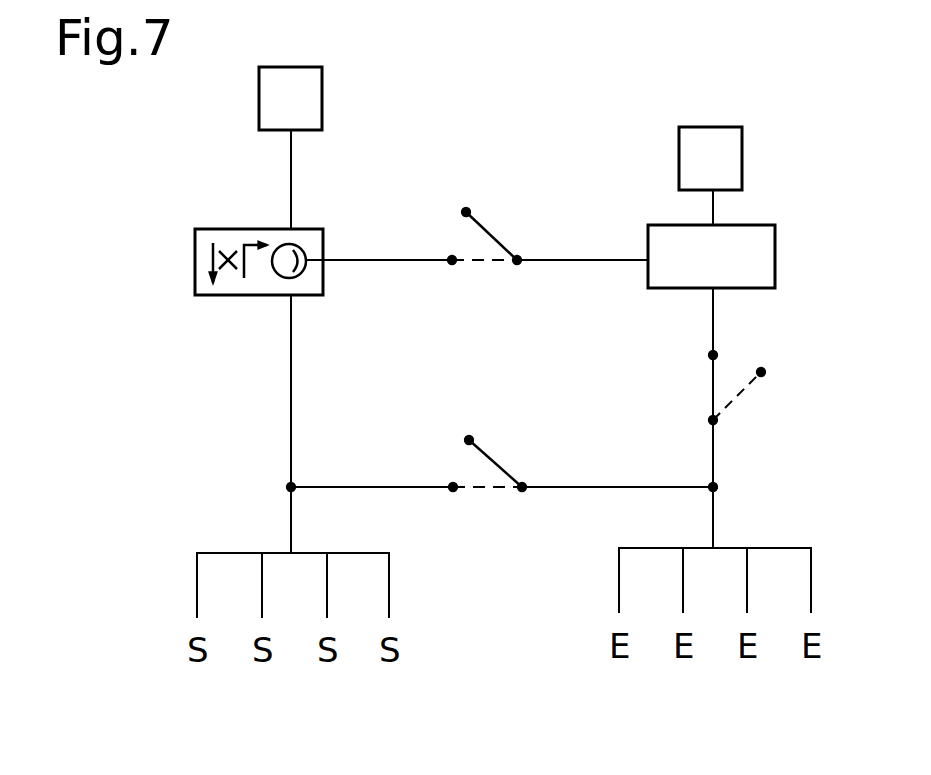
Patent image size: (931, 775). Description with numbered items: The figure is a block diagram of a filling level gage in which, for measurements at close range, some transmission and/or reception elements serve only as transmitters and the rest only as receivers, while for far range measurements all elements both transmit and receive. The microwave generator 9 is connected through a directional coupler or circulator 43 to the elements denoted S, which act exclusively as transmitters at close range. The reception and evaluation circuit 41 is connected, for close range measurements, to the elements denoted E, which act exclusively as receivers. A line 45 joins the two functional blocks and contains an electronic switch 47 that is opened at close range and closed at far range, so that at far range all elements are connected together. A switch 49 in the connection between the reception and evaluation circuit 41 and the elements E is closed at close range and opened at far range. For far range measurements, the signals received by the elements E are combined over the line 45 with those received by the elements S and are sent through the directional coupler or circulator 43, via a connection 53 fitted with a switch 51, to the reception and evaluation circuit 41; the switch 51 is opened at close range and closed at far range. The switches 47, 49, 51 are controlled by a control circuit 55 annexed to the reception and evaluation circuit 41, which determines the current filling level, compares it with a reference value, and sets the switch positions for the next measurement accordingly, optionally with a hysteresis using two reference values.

The microwave generator 9 is at (318, 118).
The reception and evaluation circuit 41 is at (711, 256).
The directional coupler or circulator 43 is at (207, 264).
The line 45 is at (405, 489).
The electronic switch 47 is at (494, 462).
The switch 49 is at (750, 395).
The switch 51 is at (490, 232).
The connection 53 is at (394, 258).
The control circuit 55 is at (743, 124).